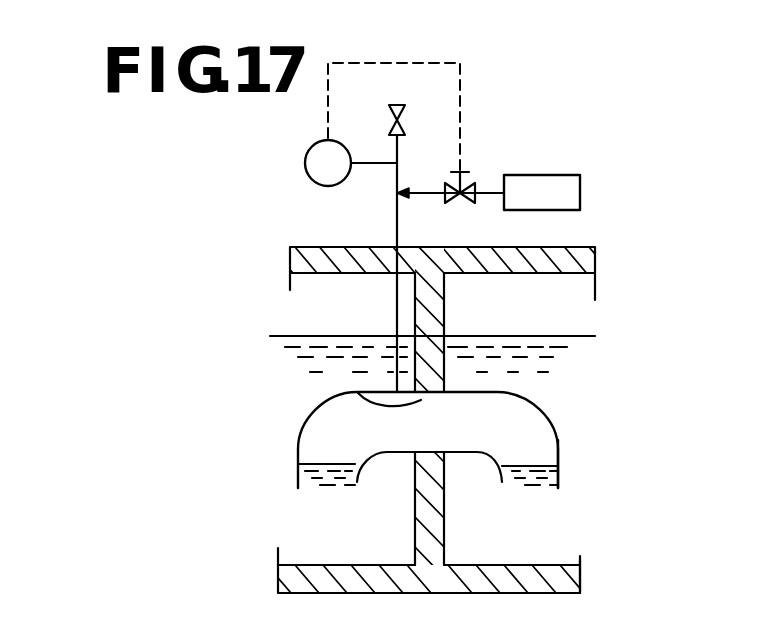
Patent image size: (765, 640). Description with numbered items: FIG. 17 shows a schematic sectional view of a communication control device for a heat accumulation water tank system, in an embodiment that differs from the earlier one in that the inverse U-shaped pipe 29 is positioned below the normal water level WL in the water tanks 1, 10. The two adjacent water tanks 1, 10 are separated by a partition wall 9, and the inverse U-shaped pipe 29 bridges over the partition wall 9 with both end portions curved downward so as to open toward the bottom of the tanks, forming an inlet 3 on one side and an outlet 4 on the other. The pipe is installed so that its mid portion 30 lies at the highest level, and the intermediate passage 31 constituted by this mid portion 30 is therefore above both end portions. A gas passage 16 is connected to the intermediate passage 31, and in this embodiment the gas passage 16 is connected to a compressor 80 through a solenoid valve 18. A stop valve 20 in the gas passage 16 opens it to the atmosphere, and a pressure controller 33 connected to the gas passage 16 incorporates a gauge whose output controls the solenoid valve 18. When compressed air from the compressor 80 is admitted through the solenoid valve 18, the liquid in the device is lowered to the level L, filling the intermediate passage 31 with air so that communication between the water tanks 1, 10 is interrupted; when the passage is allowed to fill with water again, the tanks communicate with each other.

The water tank 1 is at (355, 552).
The inlet 3 is at (533, 487).
The outlet 4 is at (312, 490).
The partition wall 9 is at (440, 526).
The water tank 10 is at (525, 555).
The gas passage 16 is at (397, 222).
The solenoid valve 18 is at (473, 187).
The stop valve 20 is at (400, 106).
The inverse U-shaped pipe 29 is at (297, 445).
The mid portion 30 is at (358, 392).
The intermediate passage 31 is at (332, 421).
The pressure controller 33 is at (306, 170).
The compressor 80 is at (568, 175).
The lowered liquid level L is at (541, 466).
The water level WL is at (533, 336).